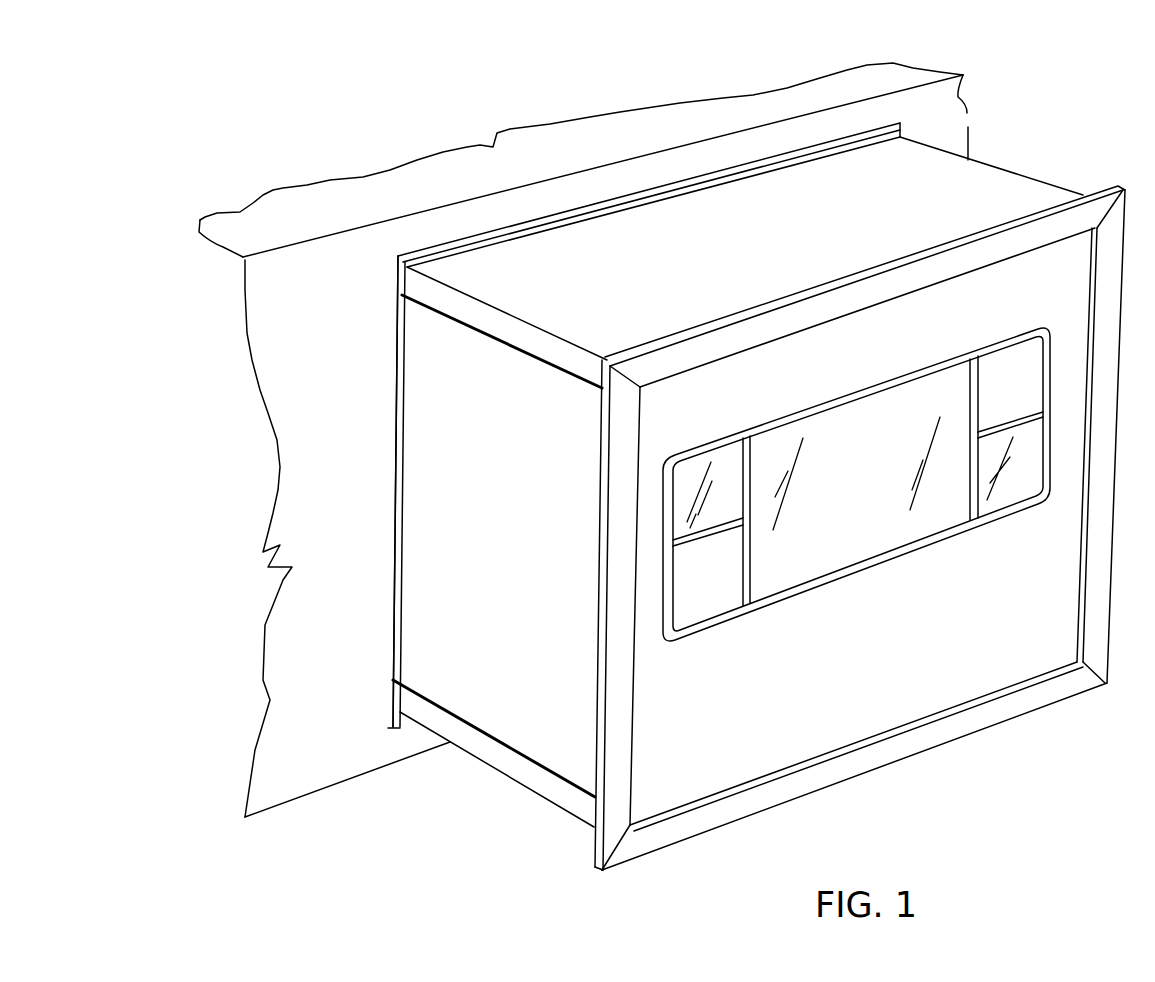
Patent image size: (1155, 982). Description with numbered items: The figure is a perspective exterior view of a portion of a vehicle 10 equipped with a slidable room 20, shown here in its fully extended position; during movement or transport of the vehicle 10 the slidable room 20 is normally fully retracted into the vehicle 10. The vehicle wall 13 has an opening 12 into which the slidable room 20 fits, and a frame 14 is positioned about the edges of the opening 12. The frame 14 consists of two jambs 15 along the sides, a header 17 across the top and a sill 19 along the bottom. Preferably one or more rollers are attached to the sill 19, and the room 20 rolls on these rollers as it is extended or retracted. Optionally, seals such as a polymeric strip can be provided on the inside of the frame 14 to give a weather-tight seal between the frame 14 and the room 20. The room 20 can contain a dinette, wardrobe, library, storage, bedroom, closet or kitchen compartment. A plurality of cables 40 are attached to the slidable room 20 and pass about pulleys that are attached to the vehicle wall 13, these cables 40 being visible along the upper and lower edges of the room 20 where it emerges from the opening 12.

The vehicle 10 is at (398, 150).
The opening 12 is at (646, 389).
The vehicle wall 13 is at (297, 372).
The frame 14 is at (813, 147).
The jambs 15 is at (397, 413).
The header 17 is at (653, 190).
The sill 19 is at (412, 722).
The slidable room 20 is at (873, 657).
The cables 40 is at (478, 337).